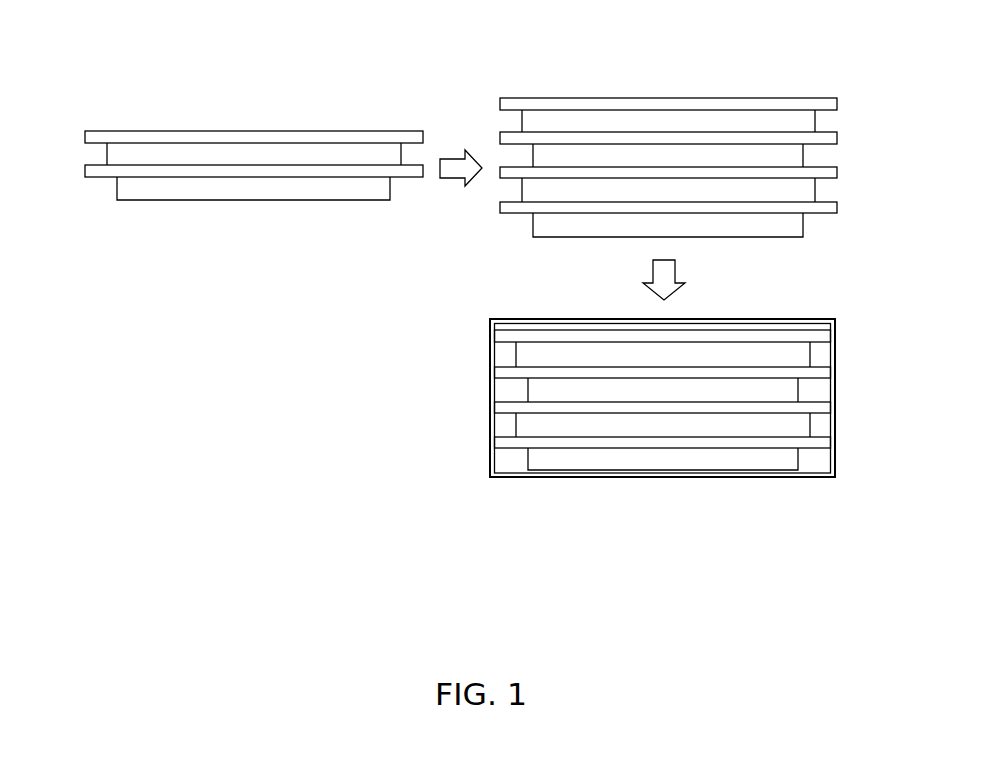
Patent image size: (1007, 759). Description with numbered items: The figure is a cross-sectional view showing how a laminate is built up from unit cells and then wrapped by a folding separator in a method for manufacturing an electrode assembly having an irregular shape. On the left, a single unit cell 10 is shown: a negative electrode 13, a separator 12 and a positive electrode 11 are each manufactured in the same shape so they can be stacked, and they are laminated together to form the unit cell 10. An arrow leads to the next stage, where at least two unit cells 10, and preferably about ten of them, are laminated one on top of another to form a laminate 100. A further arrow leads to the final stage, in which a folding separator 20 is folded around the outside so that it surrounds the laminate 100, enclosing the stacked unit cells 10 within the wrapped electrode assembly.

The unit cell 10 is at (461, 131).
The positive electrode 11 is at (118, 189).
The separator 12 is at (85, 134).
The negative electrode 13 is at (107, 153).
The folding separator 20 is at (836, 388).
The laminate 100 is at (893, 62).